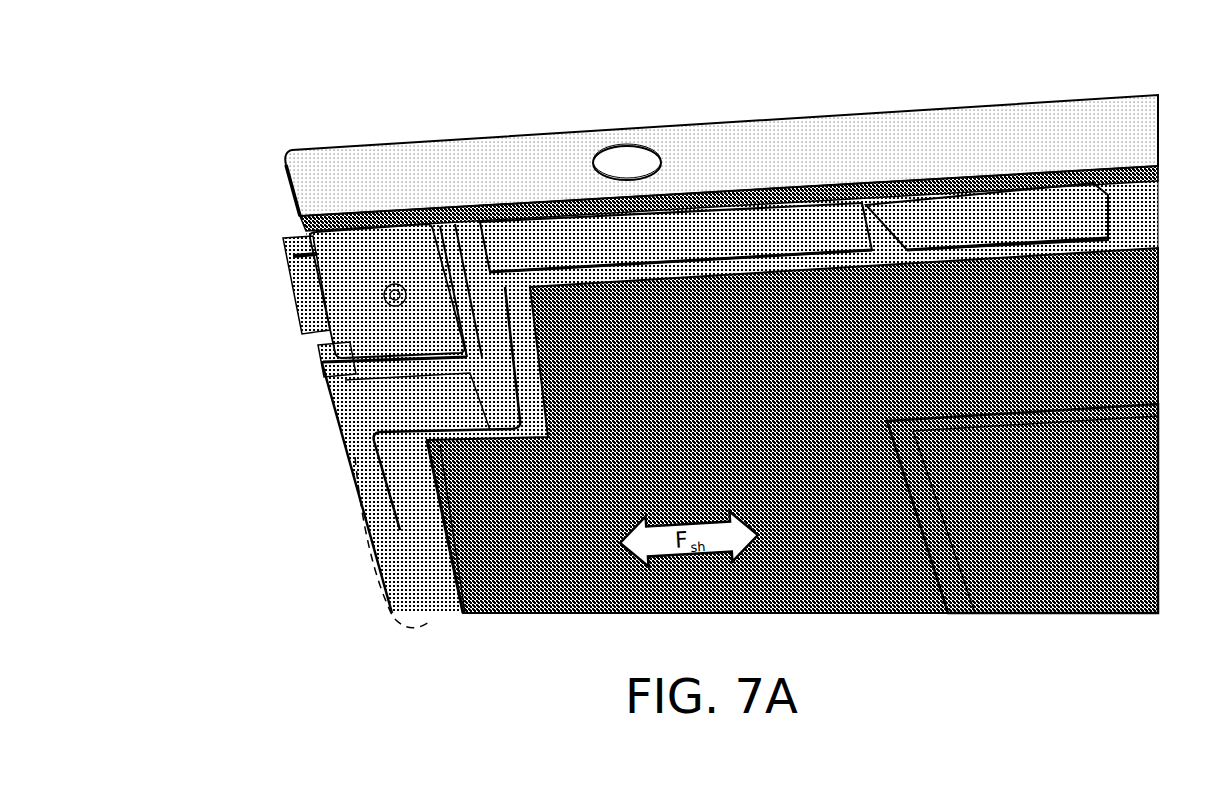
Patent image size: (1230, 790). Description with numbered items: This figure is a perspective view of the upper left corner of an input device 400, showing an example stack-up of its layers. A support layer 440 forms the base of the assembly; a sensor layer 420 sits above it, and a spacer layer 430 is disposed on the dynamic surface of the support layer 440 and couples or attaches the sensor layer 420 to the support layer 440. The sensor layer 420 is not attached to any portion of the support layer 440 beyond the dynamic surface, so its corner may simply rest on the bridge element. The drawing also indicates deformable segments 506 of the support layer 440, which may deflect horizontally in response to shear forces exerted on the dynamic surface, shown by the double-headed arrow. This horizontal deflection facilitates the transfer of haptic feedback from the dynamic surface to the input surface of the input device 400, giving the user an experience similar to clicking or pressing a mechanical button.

The input device 400 is at (258, 64).
The support layer 440 is at (445, 157).
The sensor layer 420 is at (306, 323).
The spacer layer 430 is at (433, 500).
The deformable segments 506 is at (426, 627).